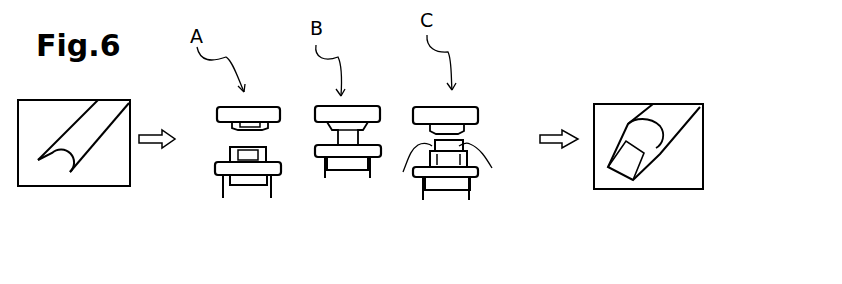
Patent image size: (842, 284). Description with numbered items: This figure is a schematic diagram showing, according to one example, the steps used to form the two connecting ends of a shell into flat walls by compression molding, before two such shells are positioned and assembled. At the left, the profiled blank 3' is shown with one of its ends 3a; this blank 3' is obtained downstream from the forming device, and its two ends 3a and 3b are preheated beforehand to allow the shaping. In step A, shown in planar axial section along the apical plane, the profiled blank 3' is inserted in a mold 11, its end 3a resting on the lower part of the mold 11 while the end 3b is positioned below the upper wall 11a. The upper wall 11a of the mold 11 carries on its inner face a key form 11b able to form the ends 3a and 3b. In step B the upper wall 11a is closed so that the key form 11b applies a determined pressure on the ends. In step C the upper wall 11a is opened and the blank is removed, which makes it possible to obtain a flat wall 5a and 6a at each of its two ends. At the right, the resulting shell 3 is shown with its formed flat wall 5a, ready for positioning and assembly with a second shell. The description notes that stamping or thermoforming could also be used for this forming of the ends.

The shell 3 is at (650, 178).
The blank 3' is at (74, 173).
The end of the blank 3a is at (53, 156).
The end of the blank 3b is at (267, 146).
The flat wall 5a is at (650, 168).
The flat wall 6a is at (491, 164).
The mold 11 is at (215, 188).
The upper wall of the mold 11a is at (262, 106).
The key form 11b is at (270, 127).